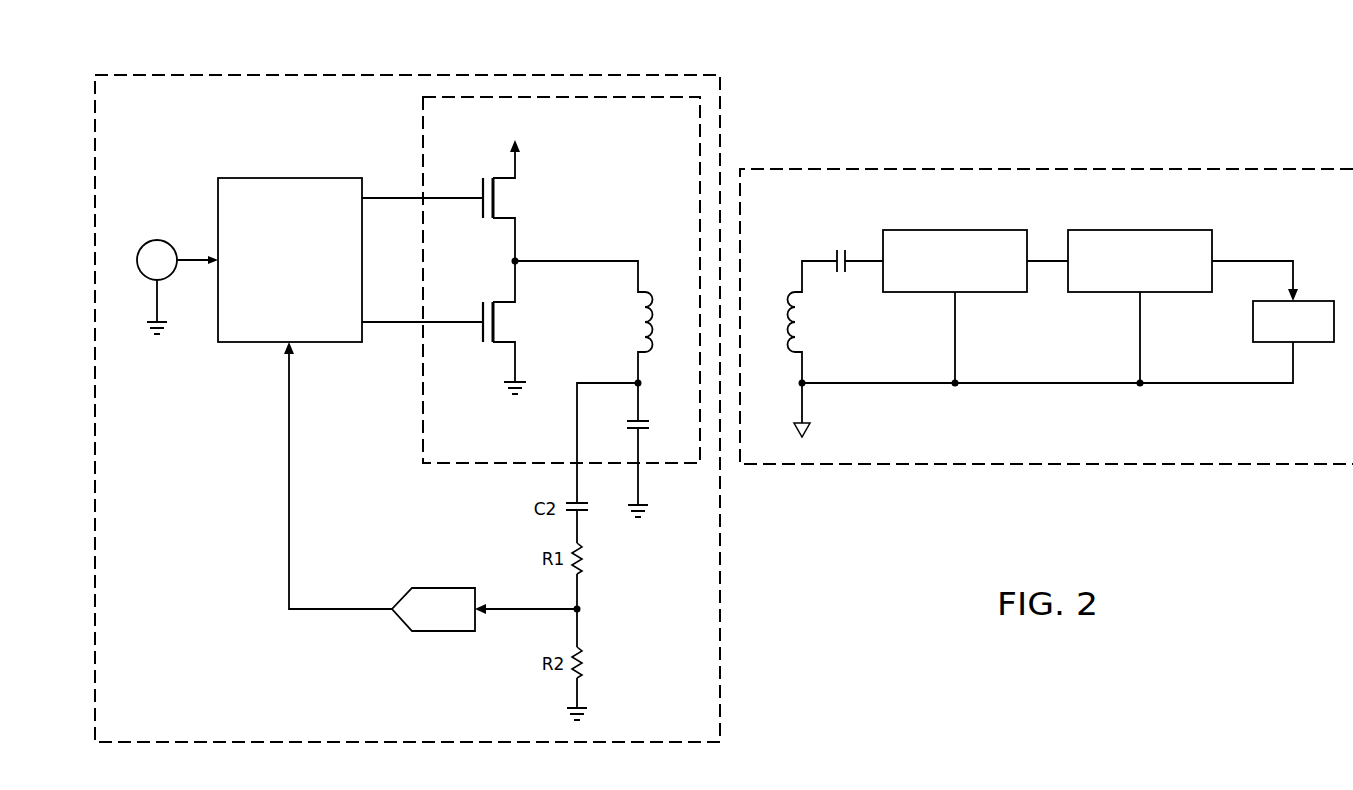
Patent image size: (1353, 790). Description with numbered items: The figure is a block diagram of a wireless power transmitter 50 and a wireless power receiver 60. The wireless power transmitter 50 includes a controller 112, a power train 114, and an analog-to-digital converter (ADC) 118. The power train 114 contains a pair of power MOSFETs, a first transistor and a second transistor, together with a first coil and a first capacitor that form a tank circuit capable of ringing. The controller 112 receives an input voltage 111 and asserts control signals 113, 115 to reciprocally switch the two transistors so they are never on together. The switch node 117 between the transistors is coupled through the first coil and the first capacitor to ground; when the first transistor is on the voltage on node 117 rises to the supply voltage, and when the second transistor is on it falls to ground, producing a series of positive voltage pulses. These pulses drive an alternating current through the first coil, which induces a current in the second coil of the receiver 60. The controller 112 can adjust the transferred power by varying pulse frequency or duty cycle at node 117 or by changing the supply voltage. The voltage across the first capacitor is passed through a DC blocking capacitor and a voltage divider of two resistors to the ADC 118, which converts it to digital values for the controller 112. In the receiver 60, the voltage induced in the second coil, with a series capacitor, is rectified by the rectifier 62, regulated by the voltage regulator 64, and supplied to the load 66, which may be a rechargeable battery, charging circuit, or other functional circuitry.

The wireless power transmitter 50 is at (244, 70).
The input voltage 111 is at (148, 242).
The controller 112 is at (270, 291).
The control signal 113 is at (404, 197).
The power train 114 is at (597, 221).
The control signal 115 is at (404, 321).
The switch node 117 is at (511, 258).
The analog-to-digital converter (ADC) 118 is at (443, 632).
The wireless power receiver 60 is at (1113, 163).
The rectifier 62 is at (934, 229).
The voltage regulator 64 is at (1159, 229).
The load 66 is at (1312, 300).